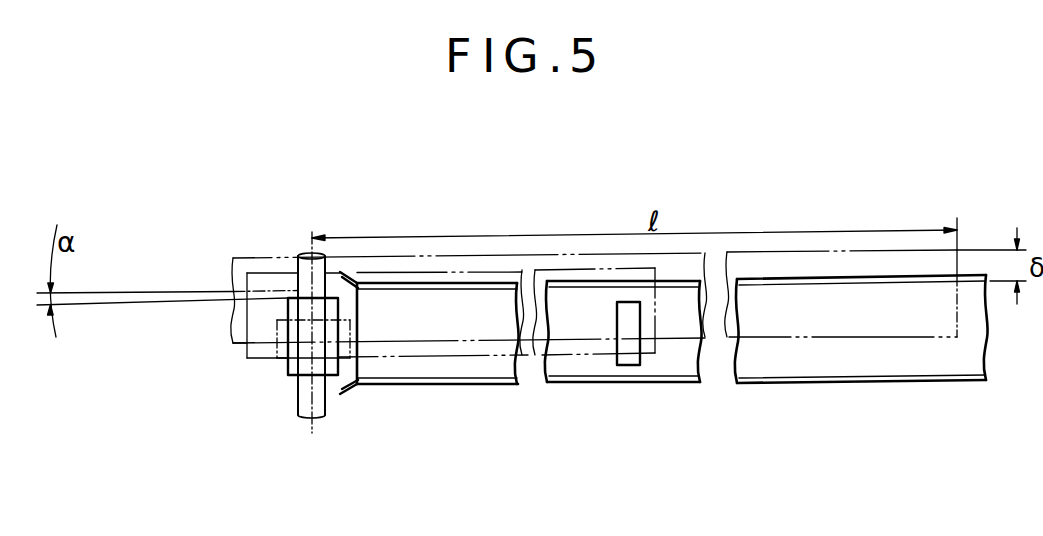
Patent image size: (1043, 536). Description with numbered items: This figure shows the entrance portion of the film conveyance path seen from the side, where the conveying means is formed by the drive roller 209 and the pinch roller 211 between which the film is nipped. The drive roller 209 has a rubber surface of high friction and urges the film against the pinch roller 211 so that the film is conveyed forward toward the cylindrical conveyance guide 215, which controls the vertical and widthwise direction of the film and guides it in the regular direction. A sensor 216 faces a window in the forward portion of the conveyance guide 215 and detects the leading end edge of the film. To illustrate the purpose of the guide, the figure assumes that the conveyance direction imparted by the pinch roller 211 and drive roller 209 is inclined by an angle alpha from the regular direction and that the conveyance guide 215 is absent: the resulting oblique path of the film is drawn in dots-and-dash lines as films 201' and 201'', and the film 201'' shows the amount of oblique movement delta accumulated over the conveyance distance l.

The film 201' is at (610, 357).
The film 201'' is at (841, 255).
The drive roller 209 is at (296, 367).
The pinch roller 211 is at (285, 337).
The conveyance guide 215 is at (402, 387).
The sensor 216 is at (632, 335).